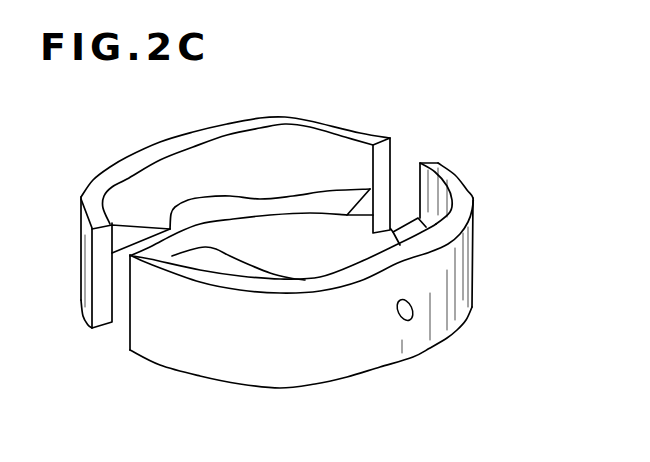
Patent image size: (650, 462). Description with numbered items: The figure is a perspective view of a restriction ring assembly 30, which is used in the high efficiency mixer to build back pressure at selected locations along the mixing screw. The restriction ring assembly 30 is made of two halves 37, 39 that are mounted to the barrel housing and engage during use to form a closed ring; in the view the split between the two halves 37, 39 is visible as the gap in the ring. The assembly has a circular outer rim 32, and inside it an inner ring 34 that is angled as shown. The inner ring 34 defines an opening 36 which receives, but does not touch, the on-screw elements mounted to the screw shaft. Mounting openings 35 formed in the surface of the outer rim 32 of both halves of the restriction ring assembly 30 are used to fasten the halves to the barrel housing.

The restriction ring assembly 30 is at (423, 350).
The circular outer rim 32 is at (460, 253).
The inner ring 34 is at (135, 205).
The mounting openings 35 is at (395, 313).
The opening 36 is at (308, 243).
The half 37 is at (196, 250).
The half 39 is at (380, 158).